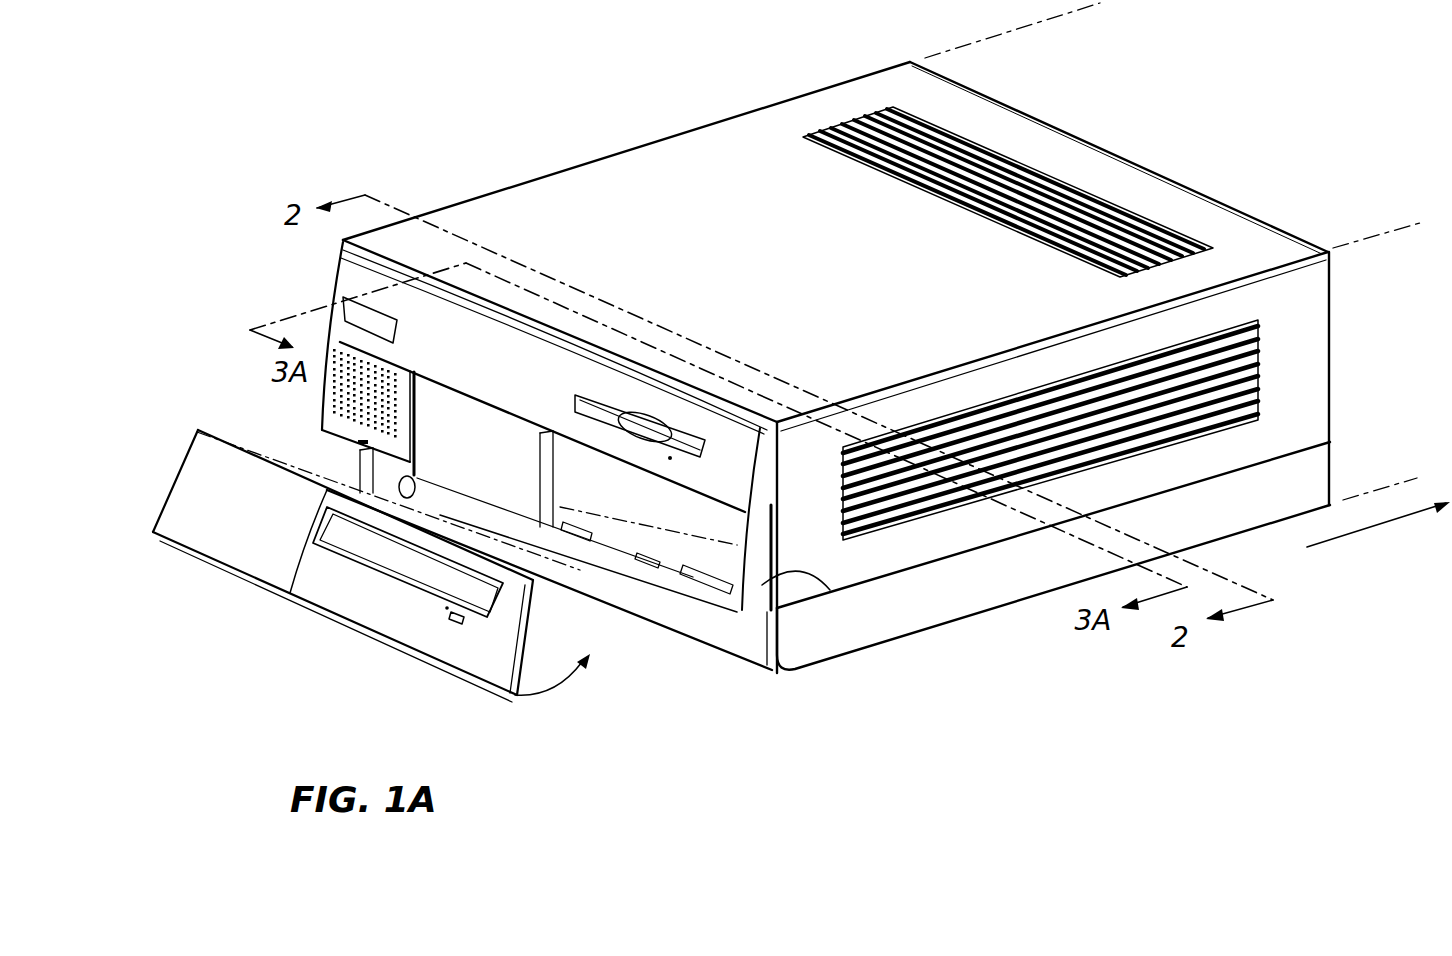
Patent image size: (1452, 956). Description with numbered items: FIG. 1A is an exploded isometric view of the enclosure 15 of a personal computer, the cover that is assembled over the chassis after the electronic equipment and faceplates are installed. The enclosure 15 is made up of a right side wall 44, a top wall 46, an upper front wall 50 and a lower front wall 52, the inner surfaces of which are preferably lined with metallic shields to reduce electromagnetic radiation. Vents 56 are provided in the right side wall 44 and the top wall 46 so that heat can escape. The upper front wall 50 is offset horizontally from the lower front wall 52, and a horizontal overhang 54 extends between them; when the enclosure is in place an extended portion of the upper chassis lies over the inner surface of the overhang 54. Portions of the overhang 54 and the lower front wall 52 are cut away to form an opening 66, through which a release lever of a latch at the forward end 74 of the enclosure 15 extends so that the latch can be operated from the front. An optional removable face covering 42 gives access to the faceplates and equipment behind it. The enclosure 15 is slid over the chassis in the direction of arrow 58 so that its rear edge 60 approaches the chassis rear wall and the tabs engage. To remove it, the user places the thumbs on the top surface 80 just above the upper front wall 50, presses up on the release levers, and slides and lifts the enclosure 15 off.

The enclosure 15 is at (820, 86).
The removable face covering 42 is at (180, 488).
The right side wall 44 is at (1312, 403).
The top wall 46 is at (1190, 202).
The upper front wall 50 is at (343, 275).
The lower front wall 52 is at (740, 640).
The horizontal overhang 54 is at (695, 592).
The vents 56 is at (1047, 233).
The arrow 58 is at (1372, 528).
The rear edge 60 is at (1023, 110).
The opening 66 is at (832, 600).
The forward end 74 is at (790, 612).
The top surface 80 is at (739, 340).